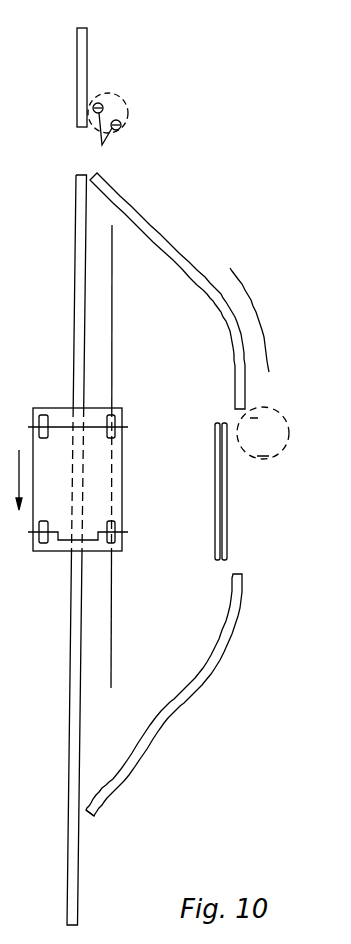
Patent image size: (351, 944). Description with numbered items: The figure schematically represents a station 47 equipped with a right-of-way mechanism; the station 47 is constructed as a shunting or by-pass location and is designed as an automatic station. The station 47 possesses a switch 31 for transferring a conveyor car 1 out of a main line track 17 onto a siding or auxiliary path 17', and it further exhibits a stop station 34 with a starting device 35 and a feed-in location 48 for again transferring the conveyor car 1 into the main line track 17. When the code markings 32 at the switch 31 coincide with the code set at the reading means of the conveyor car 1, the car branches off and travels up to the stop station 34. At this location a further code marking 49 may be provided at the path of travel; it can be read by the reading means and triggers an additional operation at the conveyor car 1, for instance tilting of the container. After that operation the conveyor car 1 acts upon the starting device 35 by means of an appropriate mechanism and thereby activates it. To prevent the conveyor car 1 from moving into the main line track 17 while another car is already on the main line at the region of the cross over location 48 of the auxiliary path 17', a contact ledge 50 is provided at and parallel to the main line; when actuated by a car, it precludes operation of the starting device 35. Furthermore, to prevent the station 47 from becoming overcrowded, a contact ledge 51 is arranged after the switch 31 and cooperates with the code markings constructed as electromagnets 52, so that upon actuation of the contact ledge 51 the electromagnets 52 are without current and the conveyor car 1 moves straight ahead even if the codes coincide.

The conveyor car 1 is at (72, 479).
The main line track 17 is at (66, 476).
The siding or auxiliary path 17' is at (164, 695).
The switch 31 is at (88, 152).
The code markings 32 is at (119, 94).
The stop station 34 is at (248, 516).
The starting device 35 is at (251, 491).
The station 47 is at (281, 516).
The feed-in location 48 is at (83, 820).
The further code marking 49 is at (289, 430).
The contact ledge 50 is at (112, 627).
The contact ledge 51 is at (255, 303).
The electromagnets 52 is at (103, 146).